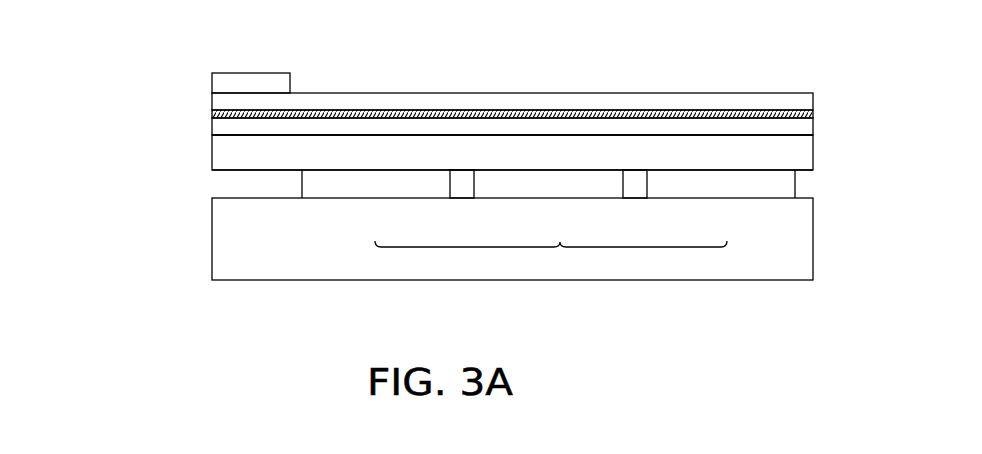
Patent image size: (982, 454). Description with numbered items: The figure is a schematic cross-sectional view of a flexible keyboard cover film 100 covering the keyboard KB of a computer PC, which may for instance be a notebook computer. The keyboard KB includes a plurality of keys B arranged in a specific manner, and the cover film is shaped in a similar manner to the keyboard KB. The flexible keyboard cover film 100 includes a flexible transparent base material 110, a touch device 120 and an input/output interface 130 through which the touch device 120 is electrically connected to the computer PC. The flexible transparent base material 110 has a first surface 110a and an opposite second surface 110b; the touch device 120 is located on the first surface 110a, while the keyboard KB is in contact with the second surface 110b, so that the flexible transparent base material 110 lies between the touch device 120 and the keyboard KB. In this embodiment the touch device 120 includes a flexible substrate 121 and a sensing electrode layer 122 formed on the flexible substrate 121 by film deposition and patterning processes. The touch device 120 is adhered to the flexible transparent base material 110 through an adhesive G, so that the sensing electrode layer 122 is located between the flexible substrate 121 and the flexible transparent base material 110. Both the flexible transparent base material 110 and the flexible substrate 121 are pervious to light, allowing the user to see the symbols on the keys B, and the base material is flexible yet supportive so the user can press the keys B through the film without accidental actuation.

The flexible keyboard cover film 100 is at (82, 43).
The input/output interface 130 is at (232, 83).
The touch device 120 is at (135, 72).
The flexible substrate 121 is at (233, 101).
The sensing electrode layer 122 is at (235, 113).
The adhesive G is at (227, 126).
The flexible transparent base material 110 is at (240, 160).
The first surface 110a is at (784, 133).
The second surface 110b is at (802, 173).
The keys B is at (377, 190).
The computer PC is at (270, 263).
The keyboard KB is at (551, 261).